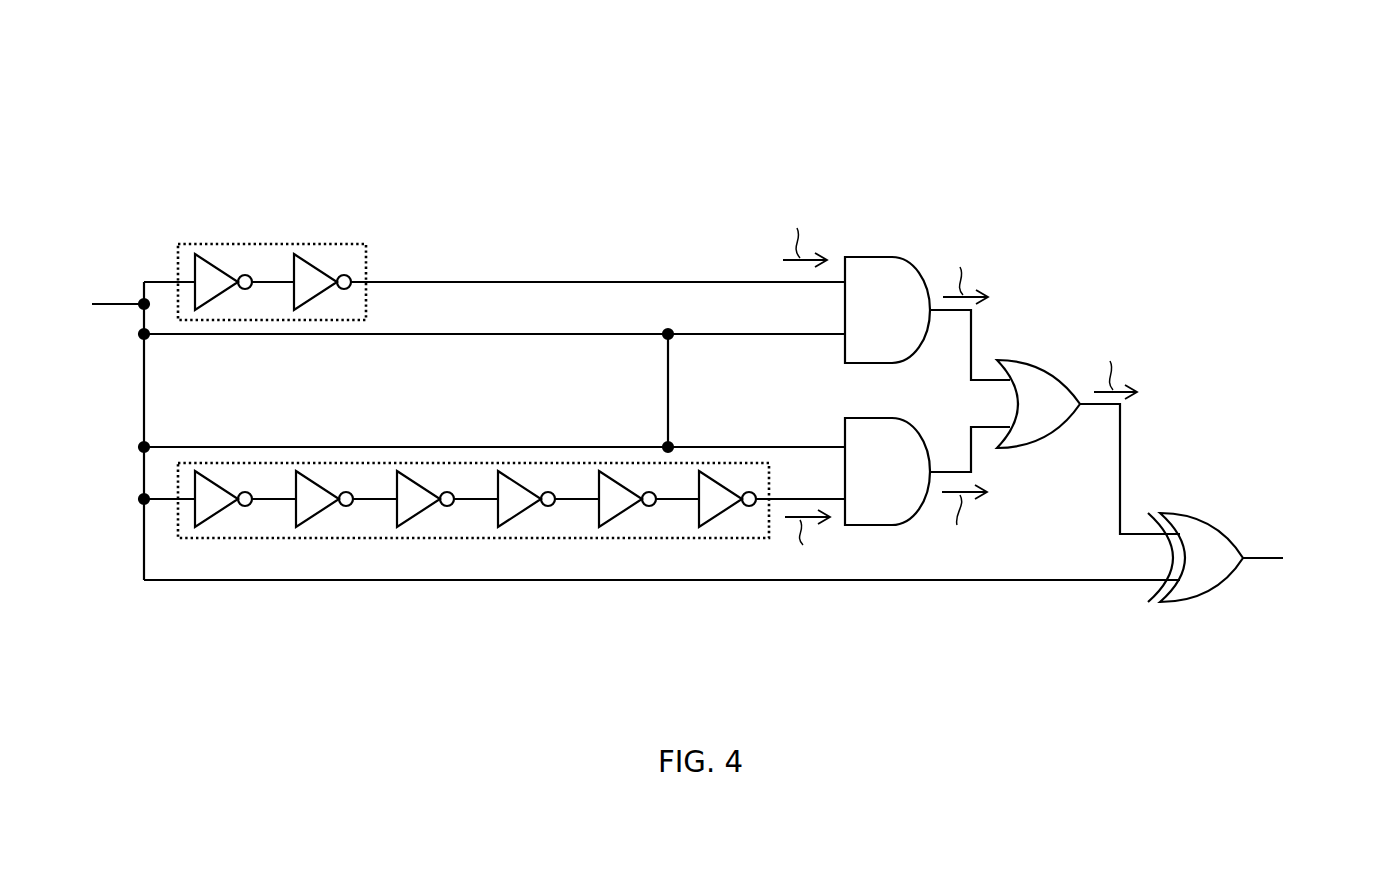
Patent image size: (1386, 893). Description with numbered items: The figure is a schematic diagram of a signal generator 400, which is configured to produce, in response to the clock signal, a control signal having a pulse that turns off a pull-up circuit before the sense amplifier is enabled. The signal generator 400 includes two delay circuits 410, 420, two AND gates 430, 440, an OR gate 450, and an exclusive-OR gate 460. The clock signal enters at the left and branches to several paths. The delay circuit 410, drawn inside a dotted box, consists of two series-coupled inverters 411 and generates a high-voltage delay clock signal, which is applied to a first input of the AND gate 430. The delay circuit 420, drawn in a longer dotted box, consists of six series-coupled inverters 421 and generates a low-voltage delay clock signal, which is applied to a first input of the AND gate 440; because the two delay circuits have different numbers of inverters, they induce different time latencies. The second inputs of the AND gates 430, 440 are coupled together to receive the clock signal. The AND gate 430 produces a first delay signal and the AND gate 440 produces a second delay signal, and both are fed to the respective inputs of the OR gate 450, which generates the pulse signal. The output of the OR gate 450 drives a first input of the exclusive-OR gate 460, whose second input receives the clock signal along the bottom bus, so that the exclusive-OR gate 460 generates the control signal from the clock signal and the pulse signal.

The signal generator 400 is at (188, 69).
The delay circuit 410 is at (270, 244).
The inverter 411 is at (213, 253).
The delay circuit 420 is at (270, 463).
The inverter 421 is at (213, 471).
The AND gate 430 is at (901, 323).
The AND gate 440 is at (901, 487).
The OR gate 450 is at (1066, 415).
The exclusive-OR (XOR) gate 460 is at (1227, 573).